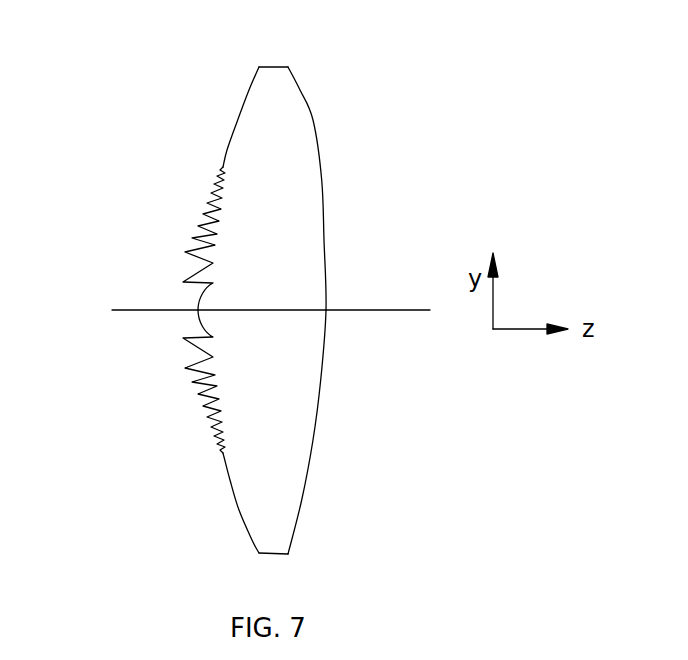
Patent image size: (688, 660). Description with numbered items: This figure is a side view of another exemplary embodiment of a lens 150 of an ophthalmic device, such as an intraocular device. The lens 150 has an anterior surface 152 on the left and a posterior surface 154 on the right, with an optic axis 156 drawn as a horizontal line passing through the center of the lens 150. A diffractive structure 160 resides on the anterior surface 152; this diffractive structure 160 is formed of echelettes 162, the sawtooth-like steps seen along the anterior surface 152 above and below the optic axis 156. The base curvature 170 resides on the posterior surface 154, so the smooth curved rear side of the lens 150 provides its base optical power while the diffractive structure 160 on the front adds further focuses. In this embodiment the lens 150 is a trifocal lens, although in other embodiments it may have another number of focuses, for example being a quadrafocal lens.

The lens 150 is at (294, 41).
The anterior surface 152 is at (232, 518).
The posterior surface 154 is at (317, 517).
The optic axis 156 is at (112, 310).
The diffractive structure 160 is at (155, 253).
The echelettes 162 is at (190, 338).
The base curvature 170 is at (343, 253).